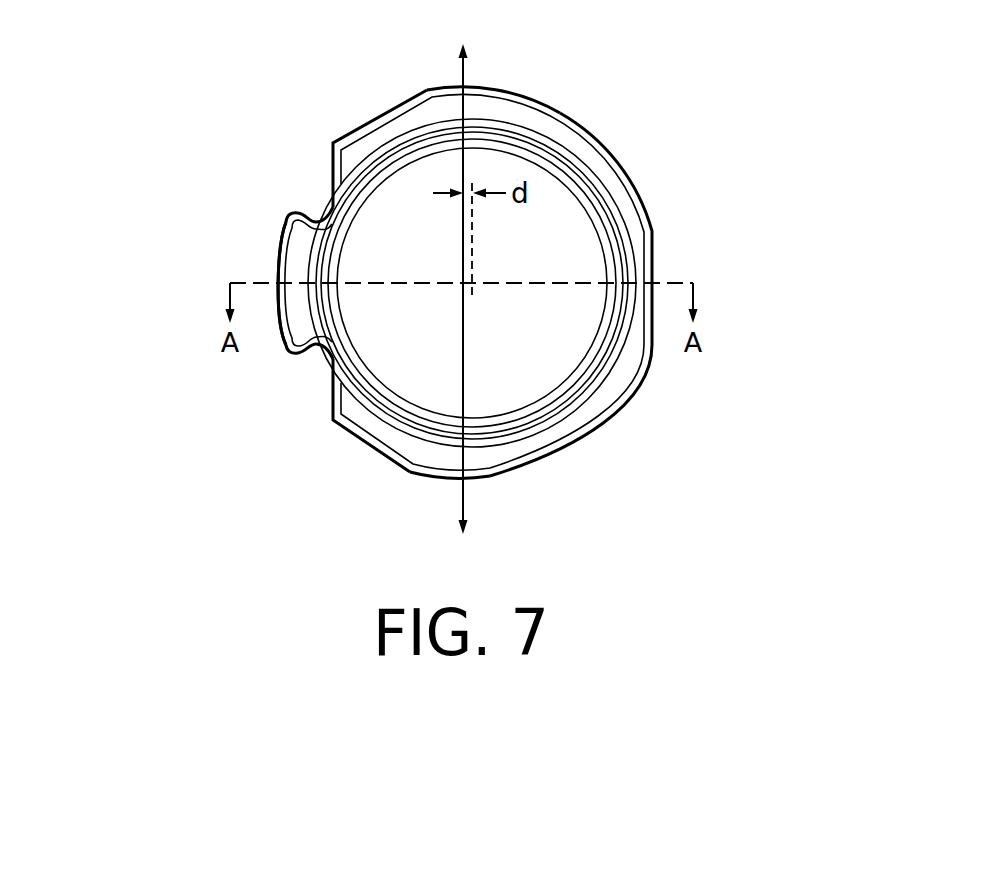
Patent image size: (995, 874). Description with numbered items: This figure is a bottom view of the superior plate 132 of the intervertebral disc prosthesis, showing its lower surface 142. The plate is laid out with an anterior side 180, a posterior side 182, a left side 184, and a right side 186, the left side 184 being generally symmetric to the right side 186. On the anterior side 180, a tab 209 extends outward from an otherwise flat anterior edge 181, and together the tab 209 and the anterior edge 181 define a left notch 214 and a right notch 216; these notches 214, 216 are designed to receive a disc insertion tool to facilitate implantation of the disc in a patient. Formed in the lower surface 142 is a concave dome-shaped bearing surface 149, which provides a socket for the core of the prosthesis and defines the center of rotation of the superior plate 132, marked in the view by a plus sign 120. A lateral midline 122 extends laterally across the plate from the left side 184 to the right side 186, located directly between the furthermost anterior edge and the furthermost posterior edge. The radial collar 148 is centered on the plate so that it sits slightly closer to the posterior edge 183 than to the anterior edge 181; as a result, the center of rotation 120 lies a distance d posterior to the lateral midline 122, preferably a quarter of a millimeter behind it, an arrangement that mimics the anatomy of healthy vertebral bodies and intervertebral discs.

The center of rotation 120 is at (472, 282).
The lateral midline 122 is at (467, 70).
The superior plate 132 is at (343, 116).
The lower surface 142 is at (613, 188).
The radial collar 148 is at (565, 168).
The concave bearing surface 149 is at (513, 357).
The anterior side 180 is at (293, 245).
The anterior edge 181 is at (276, 254).
The posterior side 182 is at (637, 240).
The posterior edge 183 is at (651, 369).
The left side 184 is at (407, 473).
The right side 186 is at (430, 87).
The tab 209 is at (293, 323).
The left notch 214 is at (315, 359).
The right notch 216 is at (318, 211).